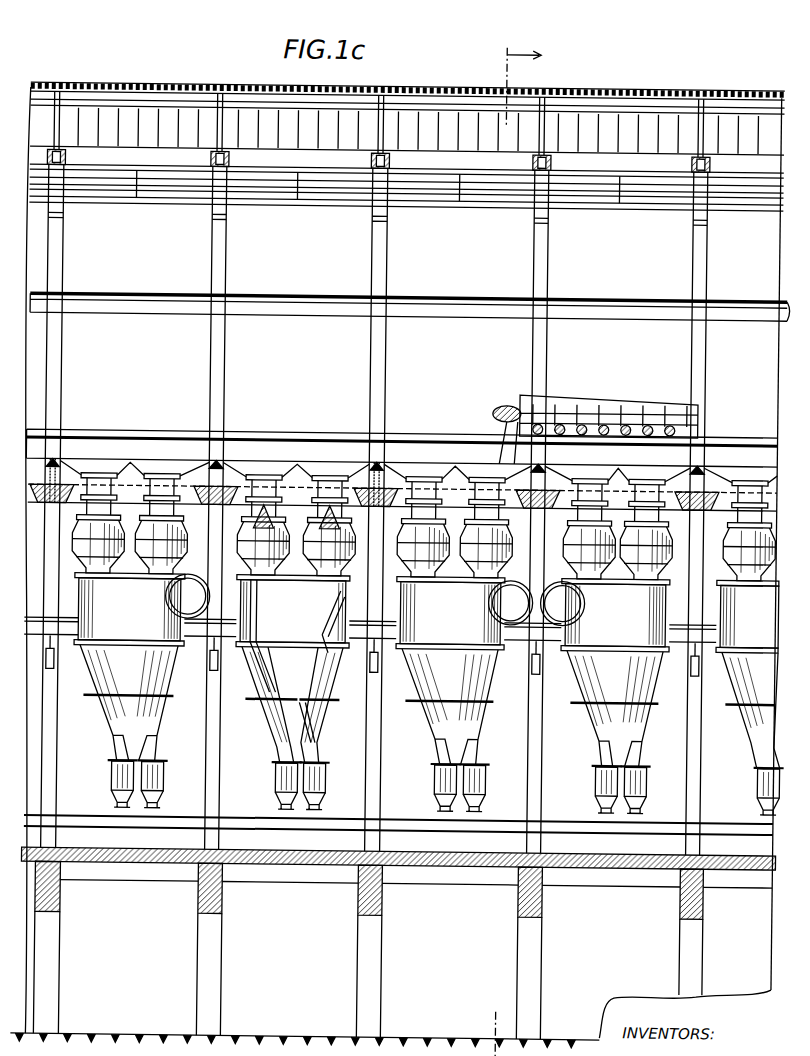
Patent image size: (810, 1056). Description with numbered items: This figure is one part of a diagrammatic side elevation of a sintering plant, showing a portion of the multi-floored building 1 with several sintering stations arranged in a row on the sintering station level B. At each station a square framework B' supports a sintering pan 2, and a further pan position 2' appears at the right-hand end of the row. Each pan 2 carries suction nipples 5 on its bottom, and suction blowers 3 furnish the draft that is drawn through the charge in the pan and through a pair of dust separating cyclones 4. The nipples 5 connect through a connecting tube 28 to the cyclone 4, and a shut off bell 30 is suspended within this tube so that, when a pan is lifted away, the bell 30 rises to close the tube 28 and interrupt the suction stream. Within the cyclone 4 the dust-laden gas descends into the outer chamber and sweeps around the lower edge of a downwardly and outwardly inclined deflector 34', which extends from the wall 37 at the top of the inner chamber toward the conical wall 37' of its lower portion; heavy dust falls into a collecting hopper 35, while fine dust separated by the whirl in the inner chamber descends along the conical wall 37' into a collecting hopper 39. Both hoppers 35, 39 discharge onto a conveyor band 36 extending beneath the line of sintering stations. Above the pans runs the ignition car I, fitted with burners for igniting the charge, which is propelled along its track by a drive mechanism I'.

The multi-floored building 1 is at (543, 234).
The sintering pan 2 is at (374, 430).
The floor beam end section 2' is at (741, 427).
The suction blower 3 is at (527, 550).
The dust separating cyclone 4 is at (99, 682).
The suction nipple 5 is at (145, 476).
The connecting tube 28 is at (144, 554).
The shut off bell 30 is at (272, 524).
The deflector 34' is at (345, 622).
The collecting hopper 35 is at (166, 776).
The conveyor band 36 is at (596, 823).
The wall 37 is at (276, 636).
The conical wall 37' is at (325, 722).
The collecting hopper 39 is at (112, 776).
The sintering station level B is at (42, 480).
The framework B' is at (358, 450).
The ignition car I is at (609, 402).
The drive mechanism I' is at (506, 416).